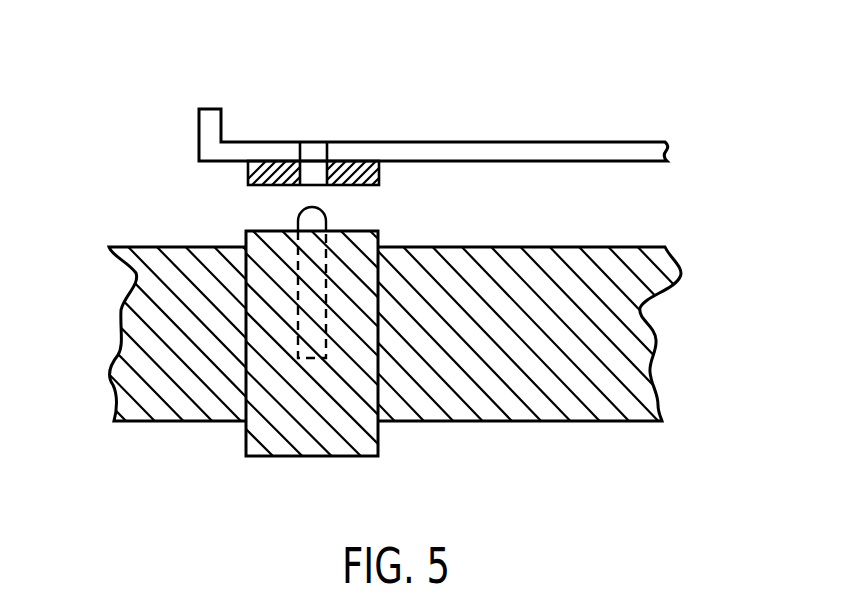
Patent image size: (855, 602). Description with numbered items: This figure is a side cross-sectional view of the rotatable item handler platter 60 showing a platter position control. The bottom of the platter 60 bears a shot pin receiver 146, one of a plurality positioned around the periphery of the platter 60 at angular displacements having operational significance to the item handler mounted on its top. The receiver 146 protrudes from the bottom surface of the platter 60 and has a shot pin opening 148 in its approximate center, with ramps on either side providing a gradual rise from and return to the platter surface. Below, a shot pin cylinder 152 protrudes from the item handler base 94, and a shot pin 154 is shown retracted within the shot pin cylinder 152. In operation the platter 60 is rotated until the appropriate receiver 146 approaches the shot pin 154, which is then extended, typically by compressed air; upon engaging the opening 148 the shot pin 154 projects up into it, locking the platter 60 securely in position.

The platter 60 is at (632, 152).
The shot pin receiver 146 is at (348, 172).
The shot pin opening 148 is at (313, 172).
The item handler base 94 is at (187, 405).
The shot pin cylinder 152 is at (330, 440).
The shot pin 154 is at (302, 213).